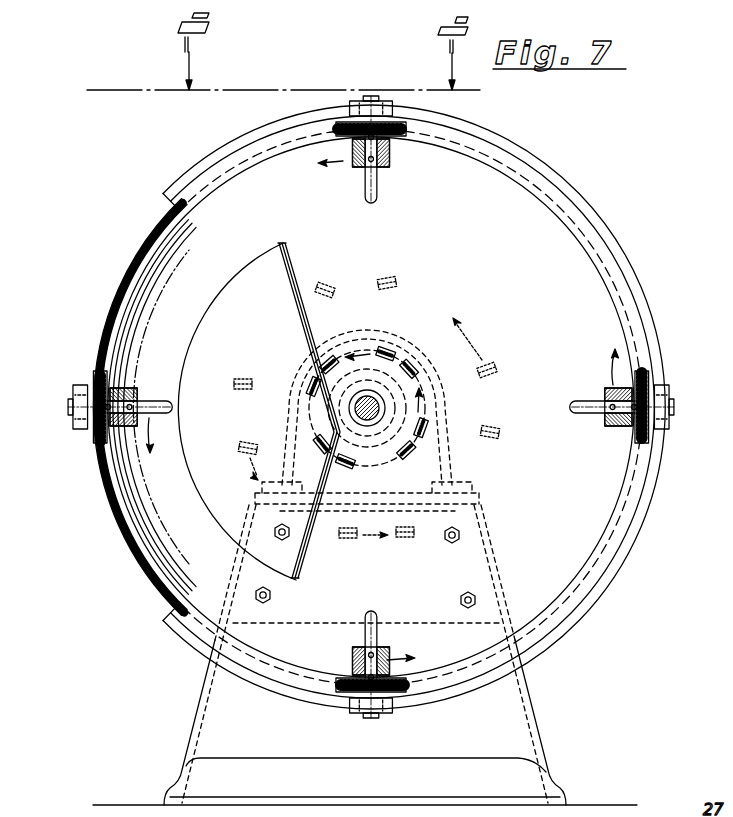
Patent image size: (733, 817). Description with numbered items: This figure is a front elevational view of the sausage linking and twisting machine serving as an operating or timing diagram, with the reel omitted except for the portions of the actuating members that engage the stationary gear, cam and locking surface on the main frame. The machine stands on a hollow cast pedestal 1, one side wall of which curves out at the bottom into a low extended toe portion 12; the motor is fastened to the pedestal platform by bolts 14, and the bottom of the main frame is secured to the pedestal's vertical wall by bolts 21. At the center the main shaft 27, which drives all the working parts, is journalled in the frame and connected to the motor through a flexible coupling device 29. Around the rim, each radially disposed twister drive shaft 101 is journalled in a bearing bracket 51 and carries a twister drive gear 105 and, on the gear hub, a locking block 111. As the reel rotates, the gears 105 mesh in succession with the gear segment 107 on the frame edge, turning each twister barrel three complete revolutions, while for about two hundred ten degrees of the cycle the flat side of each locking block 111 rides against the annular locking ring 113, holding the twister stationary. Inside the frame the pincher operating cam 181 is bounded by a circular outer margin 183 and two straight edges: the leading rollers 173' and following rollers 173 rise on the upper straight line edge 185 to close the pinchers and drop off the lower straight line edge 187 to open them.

The pedestal 1 is at (516, 718).
The toe portion 12 is at (437, 758).
The bolts 14 is at (456, 483).
The bolts 21 is at (468, 594).
The main shaft 27 is at (366, 400).
The flexible coupling device 29 is at (383, 459).
The bearing bracket 51 is at (390, 158).
The twister drive shaft 101 is at (377, 193).
The twister drive gear 105 is at (398, 130).
The gear segment 107 is at (115, 288).
The locking block 111 is at (396, 116).
The locking ring 113 is at (580, 200).
The pincher operating roller 173 is at (368, 396).
The pincher operating roller 173' is at (398, 362).
The operating cam 181 is at (214, 492).
The outer margin 183 is at (213, 300).
The upper straight line edge 185 is at (287, 246).
The lower straight line edge 187 is at (305, 557).